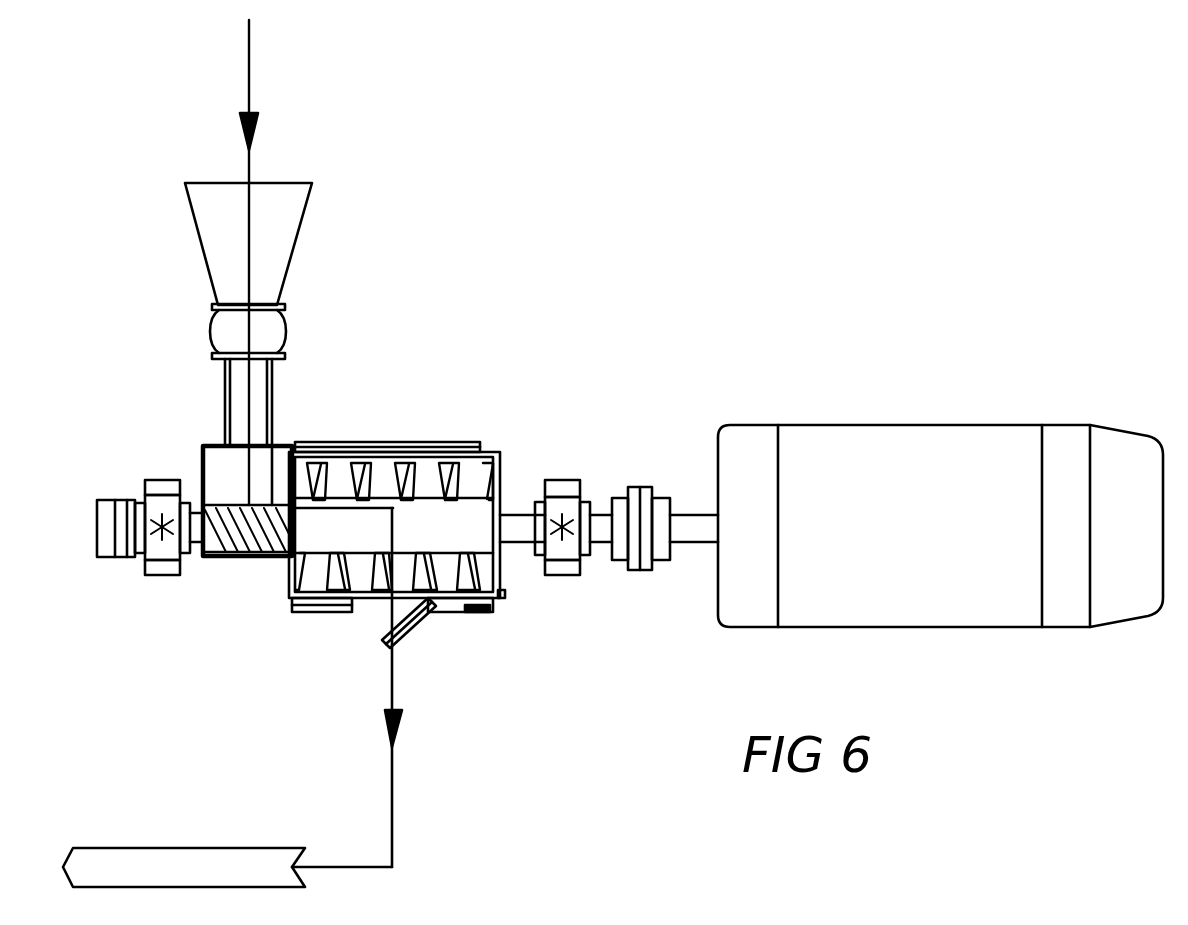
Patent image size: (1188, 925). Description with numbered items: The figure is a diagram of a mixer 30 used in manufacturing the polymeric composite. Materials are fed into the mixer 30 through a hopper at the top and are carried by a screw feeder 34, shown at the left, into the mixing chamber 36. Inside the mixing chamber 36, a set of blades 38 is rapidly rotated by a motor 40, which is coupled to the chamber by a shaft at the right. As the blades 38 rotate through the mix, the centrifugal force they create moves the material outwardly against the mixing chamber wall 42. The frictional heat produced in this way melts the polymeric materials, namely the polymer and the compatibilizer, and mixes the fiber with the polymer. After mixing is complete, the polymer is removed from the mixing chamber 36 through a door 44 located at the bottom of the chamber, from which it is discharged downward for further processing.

The mixer 30 is at (298, 245).
The screw feeder 34 is at (233, 558).
The mixing chamber 36 is at (383, 380).
The blades 38 is at (450, 462).
The motor 40 is at (930, 372).
The mixing chamber wall 42 is at (482, 447).
The door 44 is at (383, 643).